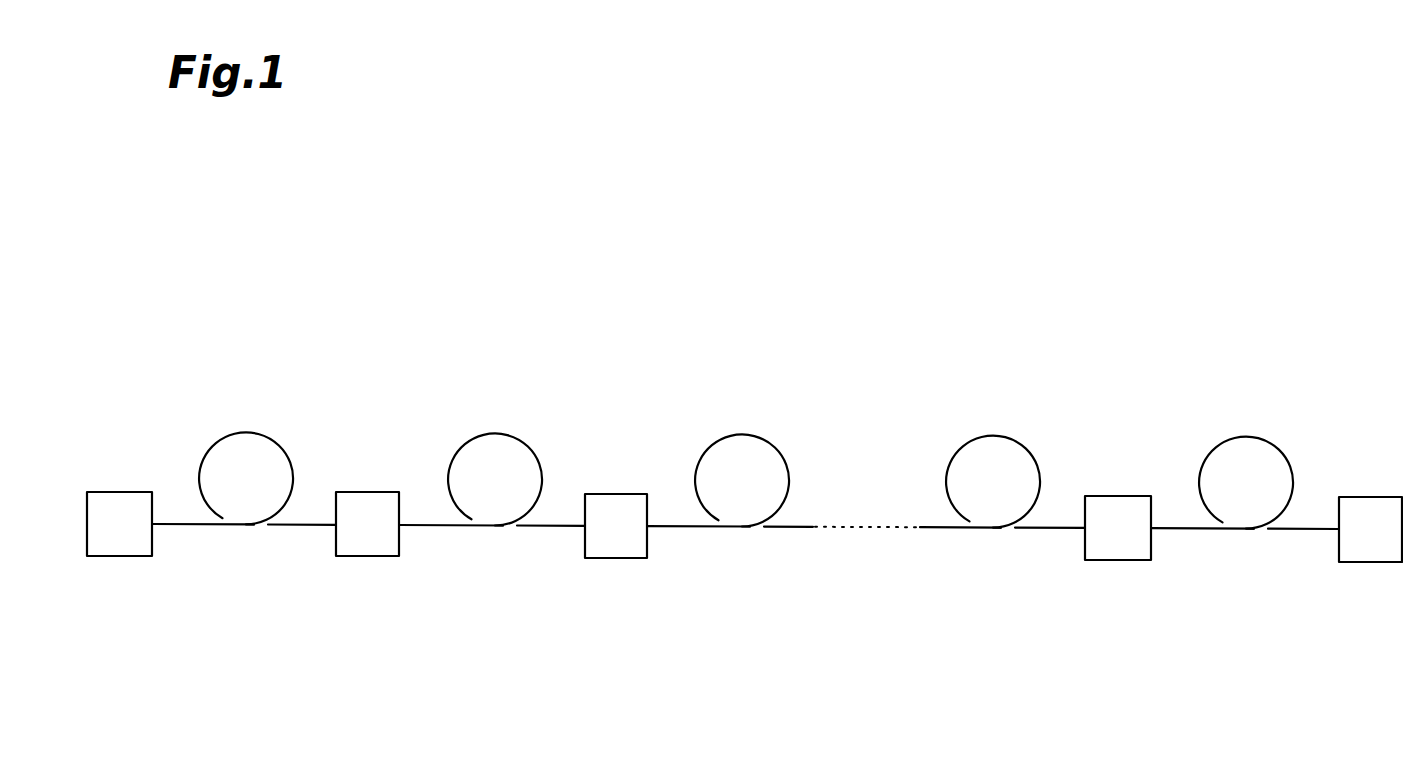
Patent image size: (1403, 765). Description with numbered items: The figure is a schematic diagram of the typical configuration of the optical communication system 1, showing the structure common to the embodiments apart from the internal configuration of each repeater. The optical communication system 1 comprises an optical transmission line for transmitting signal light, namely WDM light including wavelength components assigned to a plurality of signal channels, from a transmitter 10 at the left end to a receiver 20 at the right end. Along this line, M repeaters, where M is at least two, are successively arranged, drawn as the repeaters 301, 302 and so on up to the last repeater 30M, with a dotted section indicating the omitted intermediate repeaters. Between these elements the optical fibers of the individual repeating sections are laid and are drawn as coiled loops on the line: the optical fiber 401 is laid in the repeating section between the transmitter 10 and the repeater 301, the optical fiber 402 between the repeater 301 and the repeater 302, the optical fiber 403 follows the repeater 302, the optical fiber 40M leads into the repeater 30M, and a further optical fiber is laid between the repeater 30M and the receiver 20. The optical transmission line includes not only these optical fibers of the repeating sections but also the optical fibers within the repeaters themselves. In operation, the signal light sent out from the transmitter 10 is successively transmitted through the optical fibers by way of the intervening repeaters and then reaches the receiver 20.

The optical communication system 1 is at (850, 349).
The transmitter 10 is at (123, 492).
The receiver 20 is at (1371, 497).
The repeater 301 is at (372, 492).
The repeater 302 is at (619, 494).
The repeater 30M is at (1120, 496).
The optical fiber 401 is at (253, 432).
The optical fiber 402 is at (500, 433).
The optical fiber 403 is at (747, 434).
The optical fiber 40M is at (1000, 435).